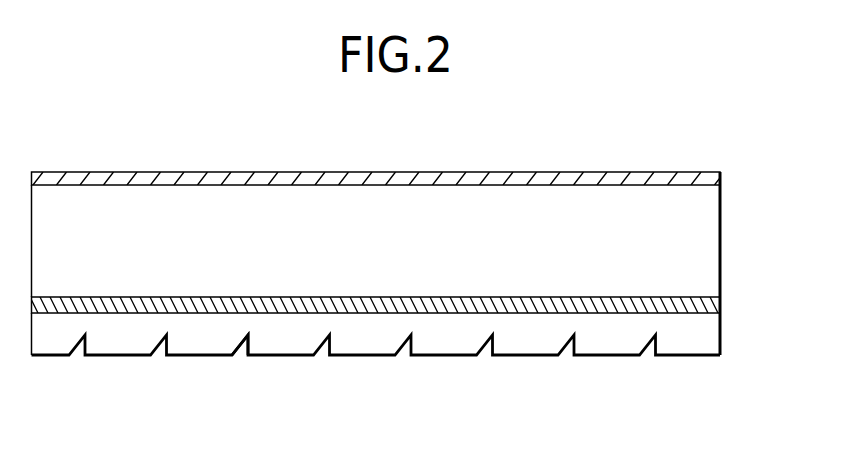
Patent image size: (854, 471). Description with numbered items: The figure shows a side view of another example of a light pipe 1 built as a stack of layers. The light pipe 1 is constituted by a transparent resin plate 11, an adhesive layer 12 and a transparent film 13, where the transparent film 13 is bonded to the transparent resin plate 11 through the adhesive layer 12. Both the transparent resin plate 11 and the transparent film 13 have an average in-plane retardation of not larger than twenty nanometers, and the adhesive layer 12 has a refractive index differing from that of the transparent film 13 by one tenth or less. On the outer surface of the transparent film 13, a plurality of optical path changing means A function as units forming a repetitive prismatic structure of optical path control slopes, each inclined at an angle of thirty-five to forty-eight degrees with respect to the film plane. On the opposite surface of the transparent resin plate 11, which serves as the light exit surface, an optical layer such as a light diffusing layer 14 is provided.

The light pipe 1 is at (800, 157).
The transparent resin plate 11 is at (708, 237).
The adhesive layer 12 is at (708, 306).
The transparent film 13 is at (708, 343).
The light diffusing layer 14 is at (708, 180).
The optical path changing means A is at (243, 355).